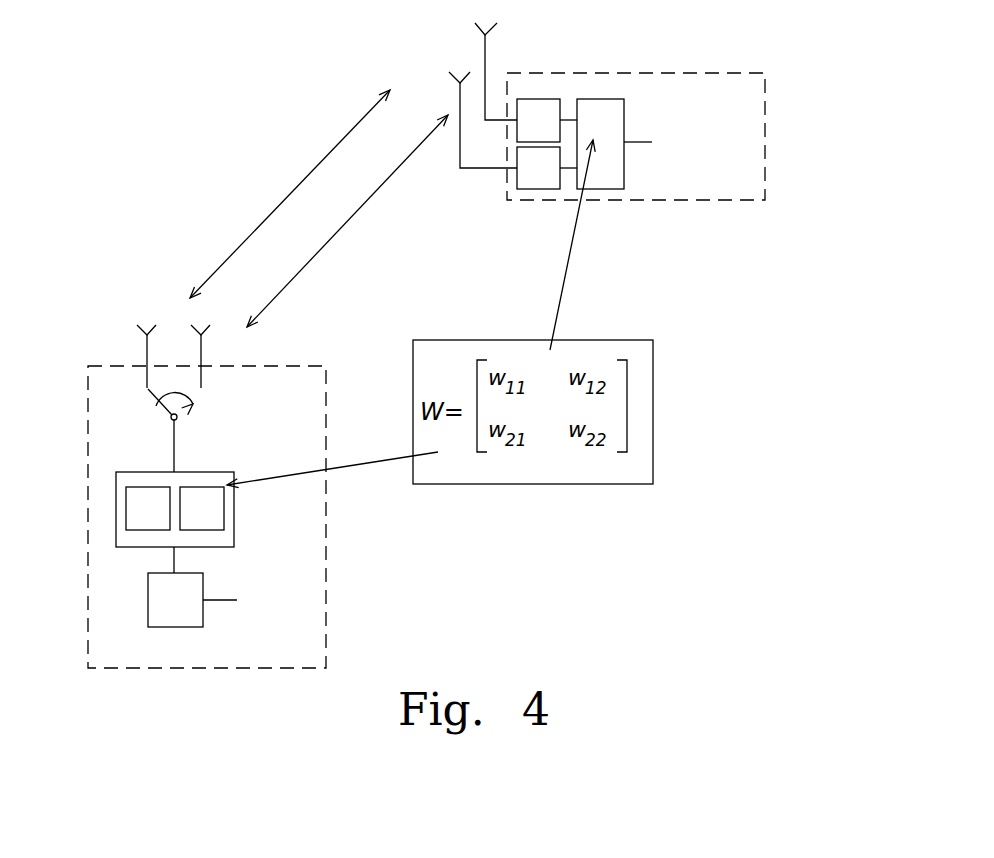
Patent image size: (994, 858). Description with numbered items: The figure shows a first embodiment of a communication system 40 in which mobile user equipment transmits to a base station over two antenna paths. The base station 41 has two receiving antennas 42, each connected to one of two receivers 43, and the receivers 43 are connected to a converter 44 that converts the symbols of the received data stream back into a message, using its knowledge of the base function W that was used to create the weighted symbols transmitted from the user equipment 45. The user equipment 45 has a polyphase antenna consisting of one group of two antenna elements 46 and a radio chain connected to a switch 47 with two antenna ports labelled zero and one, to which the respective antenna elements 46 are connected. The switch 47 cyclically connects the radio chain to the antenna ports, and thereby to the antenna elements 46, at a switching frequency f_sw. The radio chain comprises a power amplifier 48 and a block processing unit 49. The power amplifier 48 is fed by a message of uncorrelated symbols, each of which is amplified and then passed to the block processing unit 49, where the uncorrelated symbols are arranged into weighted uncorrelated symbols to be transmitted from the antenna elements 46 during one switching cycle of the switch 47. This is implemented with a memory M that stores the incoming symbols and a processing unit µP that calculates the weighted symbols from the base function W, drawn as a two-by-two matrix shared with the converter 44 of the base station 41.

The communication system 40 is at (203, 93).
The base station 41 is at (660, 88).
The receiving antennas 42 is at (484, 43).
The receivers 43 is at (545, 108).
The converter 44 is at (606, 176).
The user equipment 45 is at (103, 492).
The antenna elements 46 is at (201, 350).
The switch 47 is at (142, 413).
The power amplifier 48 is at (150, 613).
The block processing unit 49 is at (120, 530).